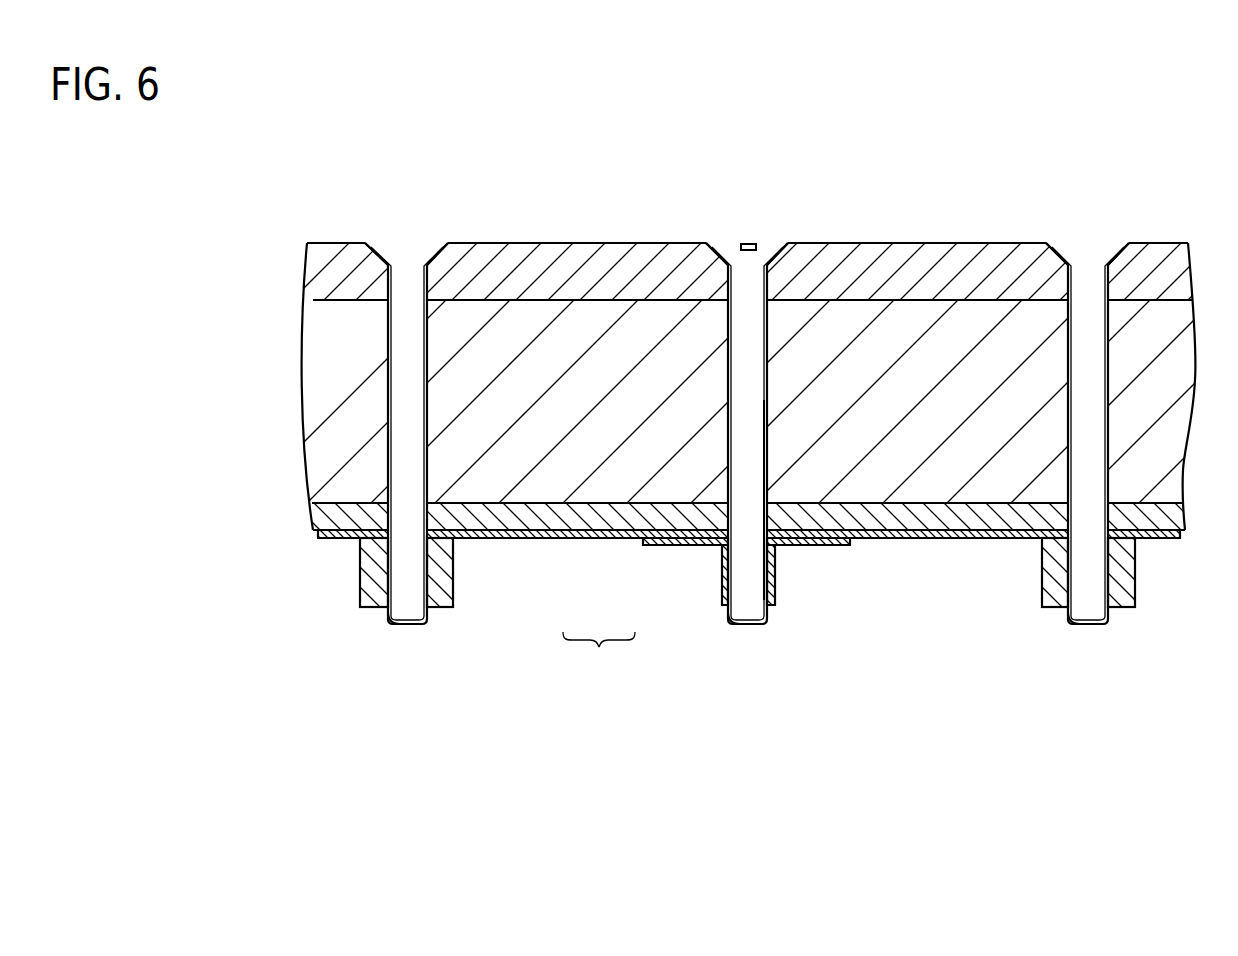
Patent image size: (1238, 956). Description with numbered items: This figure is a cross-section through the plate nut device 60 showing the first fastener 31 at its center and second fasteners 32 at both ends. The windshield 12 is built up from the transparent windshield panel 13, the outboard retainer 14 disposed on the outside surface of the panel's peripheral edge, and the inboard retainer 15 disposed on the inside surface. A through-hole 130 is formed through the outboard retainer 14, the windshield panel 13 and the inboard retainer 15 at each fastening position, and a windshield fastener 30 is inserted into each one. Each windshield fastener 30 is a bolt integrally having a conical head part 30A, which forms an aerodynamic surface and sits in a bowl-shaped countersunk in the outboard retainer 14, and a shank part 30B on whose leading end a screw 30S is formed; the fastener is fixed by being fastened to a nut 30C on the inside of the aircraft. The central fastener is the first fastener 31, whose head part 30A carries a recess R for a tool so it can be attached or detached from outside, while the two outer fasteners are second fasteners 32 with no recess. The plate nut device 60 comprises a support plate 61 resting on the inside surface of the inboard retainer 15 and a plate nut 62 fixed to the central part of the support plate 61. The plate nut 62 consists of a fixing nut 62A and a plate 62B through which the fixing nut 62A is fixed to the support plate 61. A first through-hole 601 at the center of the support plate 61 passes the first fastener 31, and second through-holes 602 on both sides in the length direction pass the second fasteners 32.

The windshield 12 is at (561, 222).
The windshield panel 13 is at (1175, 393).
The outboard retainer 14 is at (912, 242).
The inboard retainer 15 is at (1183, 526).
The windshield fastener 30 is at (403, 242).
The first fastener 31 is at (780, 242).
The second fastener 32 is at (1118, 242).
The head part 30A is at (378, 242).
The shank part 30B is at (403, 515).
The nut 30C is at (453, 600).
The screw 30S is at (388, 616).
The through-hole 130 is at (427, 396).
The recess R is at (748, 242).
The plate nut device 60 is at (599, 650).
The support plate 61 is at (600, 540).
The plate nut 62 is at (657, 547).
The fixing nut 62A is at (776, 600).
The plate 62B is at (757, 453).
The first through-hole 601 is at (737, 544).
The second through-hole 602 is at (398, 540).